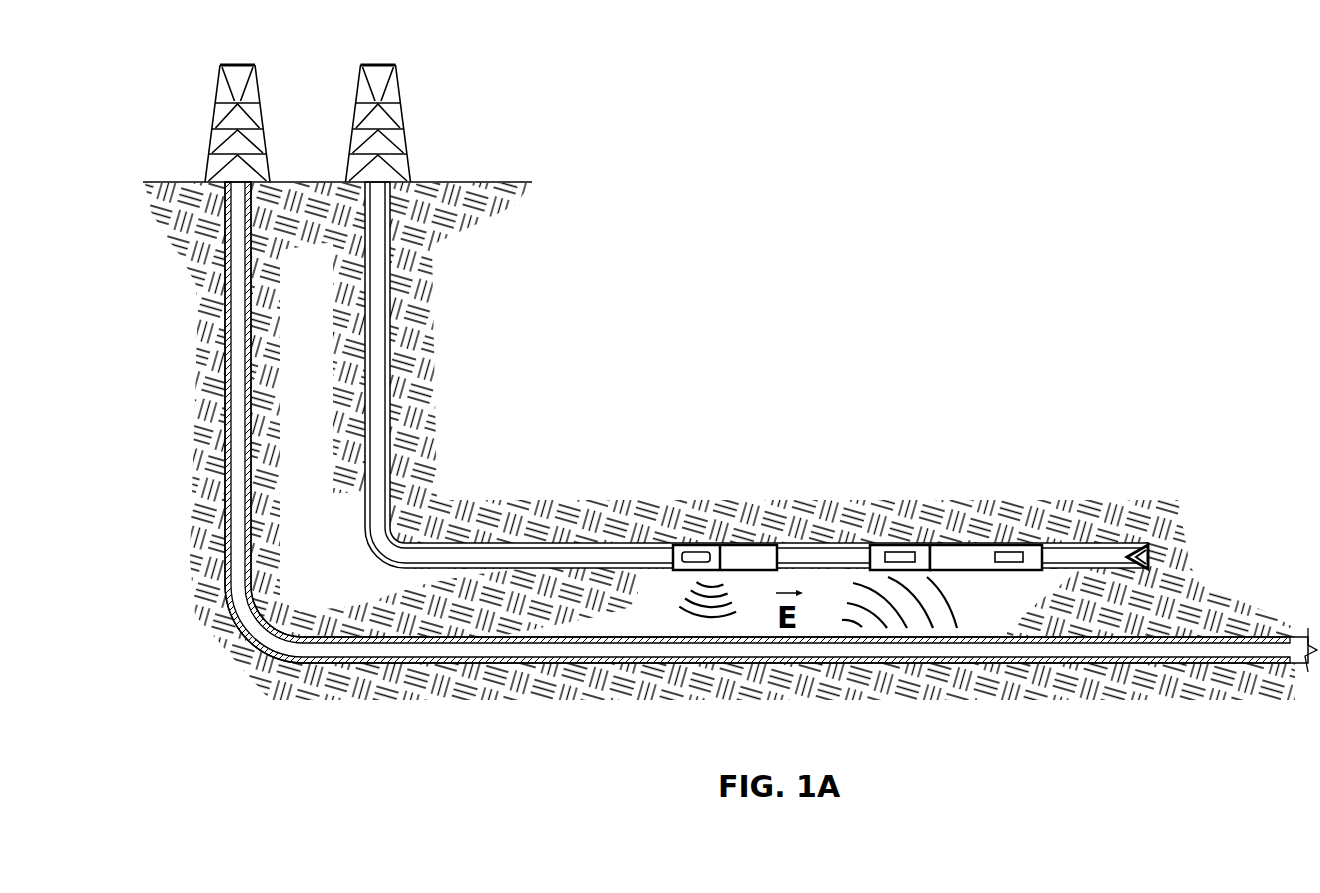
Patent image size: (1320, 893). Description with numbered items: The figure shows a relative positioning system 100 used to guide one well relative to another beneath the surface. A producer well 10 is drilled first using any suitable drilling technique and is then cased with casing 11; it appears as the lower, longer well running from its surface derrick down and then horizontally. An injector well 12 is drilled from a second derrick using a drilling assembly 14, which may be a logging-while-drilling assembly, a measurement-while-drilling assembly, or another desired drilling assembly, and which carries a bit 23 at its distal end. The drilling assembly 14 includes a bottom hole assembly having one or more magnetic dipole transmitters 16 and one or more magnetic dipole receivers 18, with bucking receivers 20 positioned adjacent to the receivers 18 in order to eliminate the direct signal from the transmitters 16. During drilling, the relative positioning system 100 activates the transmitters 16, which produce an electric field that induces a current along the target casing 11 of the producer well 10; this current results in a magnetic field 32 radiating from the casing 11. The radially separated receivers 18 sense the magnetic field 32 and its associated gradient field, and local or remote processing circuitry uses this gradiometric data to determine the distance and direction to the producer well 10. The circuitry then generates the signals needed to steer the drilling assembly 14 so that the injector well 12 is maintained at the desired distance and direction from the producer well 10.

The relative positioning system 100 is at (568, 74).
The producer well 10 is at (237, 332).
The casing 11 is at (232, 407).
The injector well 12 is at (378, 393).
The drilling assembly 14 is at (380, 468).
The magnetic dipole transmitter 16 is at (693, 548).
The magnetic dipole receiver 18 is at (1010, 550).
The bucking receiver 20 is at (902, 550).
The bit 23 is at (1136, 543).
The magnetic field 32 is at (956, 593).